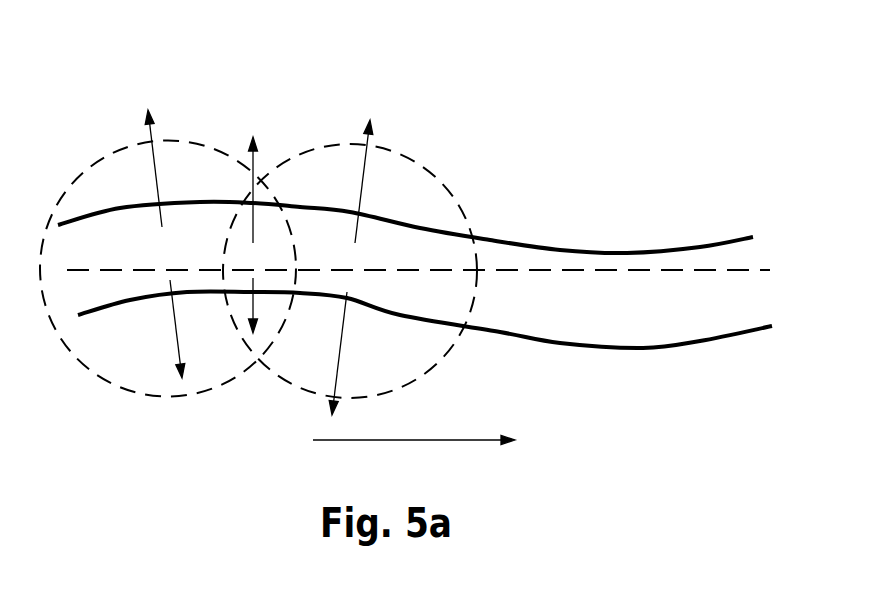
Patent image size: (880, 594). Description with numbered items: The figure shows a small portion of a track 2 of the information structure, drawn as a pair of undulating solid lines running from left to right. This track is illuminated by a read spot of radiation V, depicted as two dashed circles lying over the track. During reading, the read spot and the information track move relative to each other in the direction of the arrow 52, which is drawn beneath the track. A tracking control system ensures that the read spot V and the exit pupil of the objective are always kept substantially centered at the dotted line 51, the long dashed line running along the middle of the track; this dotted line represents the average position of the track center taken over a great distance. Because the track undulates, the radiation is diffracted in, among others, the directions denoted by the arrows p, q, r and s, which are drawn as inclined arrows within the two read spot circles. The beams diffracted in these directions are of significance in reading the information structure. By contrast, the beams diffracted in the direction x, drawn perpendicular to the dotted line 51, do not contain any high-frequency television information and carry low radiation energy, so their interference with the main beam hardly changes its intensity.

The track 2 is at (592, 318).
The dotted line 51 is at (730, 273).
The arrow 52 is at (434, 441).
The read spot of radiation V is at (120, 368).
The arrow p is at (159, 177).
The arrow q is at (186, 329).
The arrow r is at (368, 185).
The arrow s is at (338, 361).
The direction x is at (262, 235).